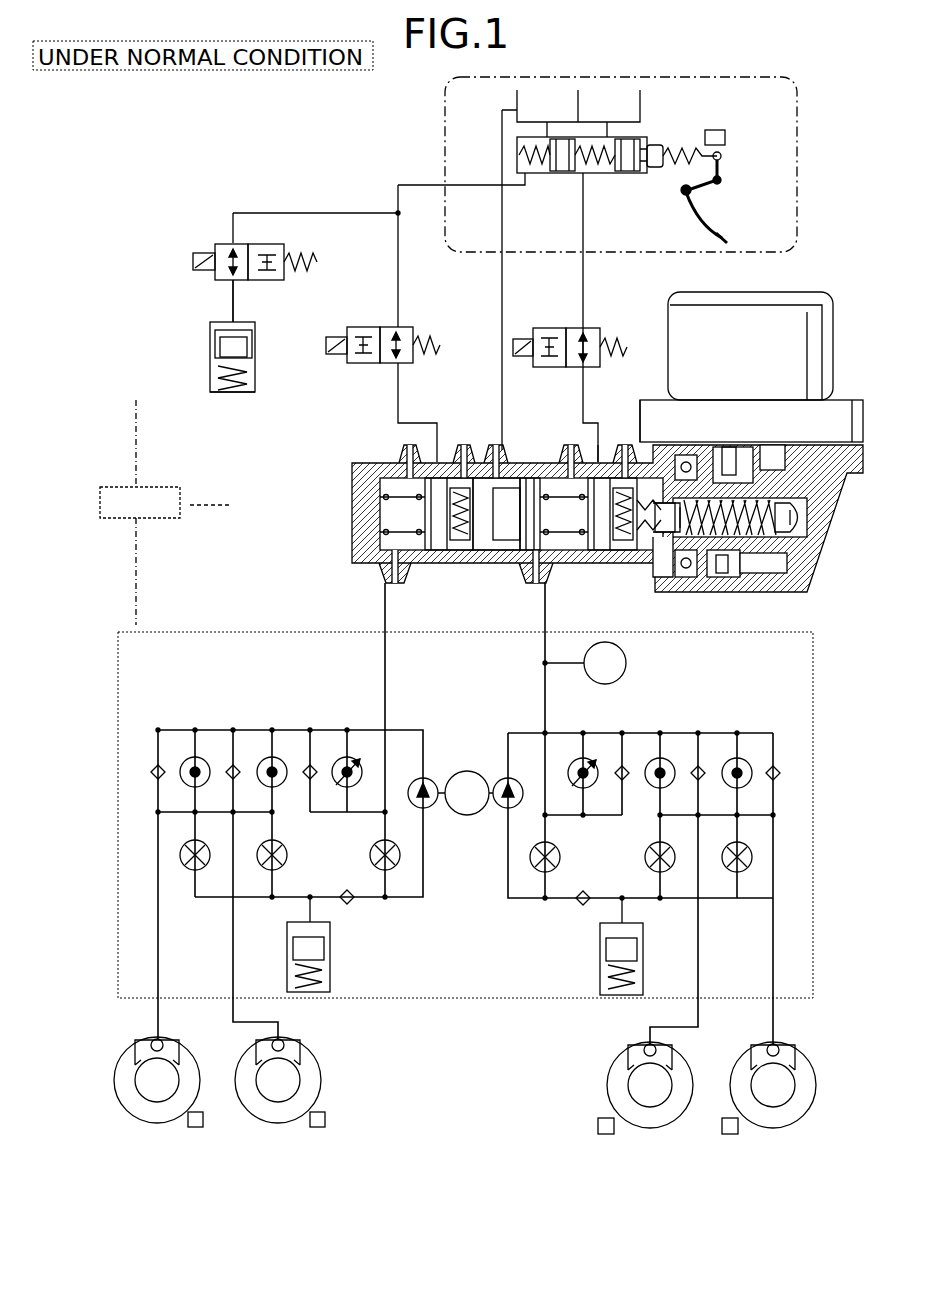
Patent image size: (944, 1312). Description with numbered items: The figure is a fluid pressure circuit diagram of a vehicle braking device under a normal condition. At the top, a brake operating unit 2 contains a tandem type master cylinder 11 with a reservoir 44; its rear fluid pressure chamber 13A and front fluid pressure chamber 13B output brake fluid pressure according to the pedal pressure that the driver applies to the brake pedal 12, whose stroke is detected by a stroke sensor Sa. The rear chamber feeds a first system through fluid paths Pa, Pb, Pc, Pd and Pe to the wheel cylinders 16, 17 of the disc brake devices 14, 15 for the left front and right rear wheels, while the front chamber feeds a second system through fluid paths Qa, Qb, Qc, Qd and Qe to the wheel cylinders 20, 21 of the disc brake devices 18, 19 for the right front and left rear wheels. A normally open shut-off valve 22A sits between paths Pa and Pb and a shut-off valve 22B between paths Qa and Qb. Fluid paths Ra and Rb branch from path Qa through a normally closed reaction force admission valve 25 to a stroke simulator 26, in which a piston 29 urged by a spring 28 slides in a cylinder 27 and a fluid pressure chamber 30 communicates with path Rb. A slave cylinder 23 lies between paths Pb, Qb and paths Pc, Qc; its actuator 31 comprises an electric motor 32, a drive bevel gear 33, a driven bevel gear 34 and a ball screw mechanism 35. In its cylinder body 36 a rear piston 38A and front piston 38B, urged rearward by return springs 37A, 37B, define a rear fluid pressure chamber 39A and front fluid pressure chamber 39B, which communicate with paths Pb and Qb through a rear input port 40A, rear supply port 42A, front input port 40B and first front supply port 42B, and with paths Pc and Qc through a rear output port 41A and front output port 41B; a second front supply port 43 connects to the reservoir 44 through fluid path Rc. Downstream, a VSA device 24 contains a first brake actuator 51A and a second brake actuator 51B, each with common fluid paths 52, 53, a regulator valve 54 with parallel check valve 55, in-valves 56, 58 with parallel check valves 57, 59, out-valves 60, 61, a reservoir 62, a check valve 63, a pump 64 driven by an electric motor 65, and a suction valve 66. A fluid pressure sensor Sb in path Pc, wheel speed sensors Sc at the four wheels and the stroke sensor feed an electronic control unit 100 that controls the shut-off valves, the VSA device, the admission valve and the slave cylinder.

The brake operating unit 2 is at (436, 118).
The master cylinder 11 is at (648, 125).
The brake pedal 12 is at (728, 232).
The rear fluid pressure chamber 13A is at (606, 173).
The front fluid pressure chamber 13B is at (558, 172).
The disc brake device 14 is at (607, 1078).
The disc brake device 15 is at (818, 1095).
The wheel cylinder 16 is at (628, 1043).
The wheel cylinder 17 is at (795, 1049).
The disc brake device 18 is at (323, 1085).
The disc brake device 19 is at (112, 1080).
The wheel cylinder 20 is at (300, 1039).
The wheel cylinder 21 is at (135, 1039).
The shut-off valve 22A is at (593, 330).
The shut-off valve 22B is at (410, 325).
The slave cylinder 23 is at (352, 462).
The VSA device 24 is at (185, 632).
The reaction force admission valve 25 is at (225, 240).
The stroke simulator 26 is at (258, 342).
The cylinder 27 is at (255, 376).
The spring 28 is at (248, 393).
The piston 29 is at (212, 358).
The fluid pressure chamber 30 is at (240, 325).
The actuator 31 is at (790, 585).
The electric motor 32 is at (828, 335).
The drive bevel gear 33 is at (751, 421).
The driven bevel gear 34 is at (745, 575).
The ball screw mechanism 35 is at (700, 540).
The cylinder body 36 is at (565, 455).
The return spring 37A is at (598, 552).
The return spring 37B is at (428, 548).
The rear piston 38A is at (625, 545).
The front piston 38B is at (460, 540).
The rear fluid pressure chamber 39A is at (570, 478).
The front fluid pressure chamber 39B is at (380, 507).
The rear input port 40A is at (620, 448).
The front input port 40B is at (404, 450).
The rear output port 41A is at (532, 580).
The front output port 41B is at (385, 580).
The rear supply port 42A is at (632, 462).
The first front supply port 42B is at (462, 450).
The second front supply port 43 is at (492, 450).
The reservoir 44 is at (515, 99).
The first brake actuator 51A is at (793, 878).
The second brake actuator 51B is at (130, 875).
The fluid path 52 is at (226, 725).
The fluid path 53 is at (232, 905).
The regulator valve 54 is at (345, 757).
The check valve 55 is at (307, 764).
The in-valve 56 is at (190, 757).
The check valve 57 is at (152, 765).
The in-valve 58 is at (268, 757).
The check valve 59 is at (230, 764).
The out-valve 60 is at (192, 870).
The out-valve 61 is at (287, 862).
The reservoir 62 is at (332, 970).
The check valve 63 is at (352, 905).
The pump 64 is at (430, 808).
The electric motor 65 is at (467, 771).
The suction valve 66 is at (370, 850).
The electronic control unit 100 is at (110, 487).
The fluid path Ra is at (316, 212).
The fluid path Rb is at (228, 305).
The fluid path Rc is at (500, 352).
The fluid path Qa is at (396, 290).
The fluid path Qb is at (396, 392).
The fluid path Qc is at (390, 605).
The fluid path Qd is at (234, 1020).
The fluid path Qe is at (156, 1012).
The fluid path Pa is at (582, 312).
The fluid path Pb is at (588, 405).
The fluid path Pc is at (550, 605).
The fluid path Pd is at (700, 1028).
The fluid path Pe is at (775, 1030).
The stroke sensor Sa is at (725, 138).
The fluid pressure sensor Sb is at (627, 668).
The wheel speed sensor Sc is at (204, 1126).